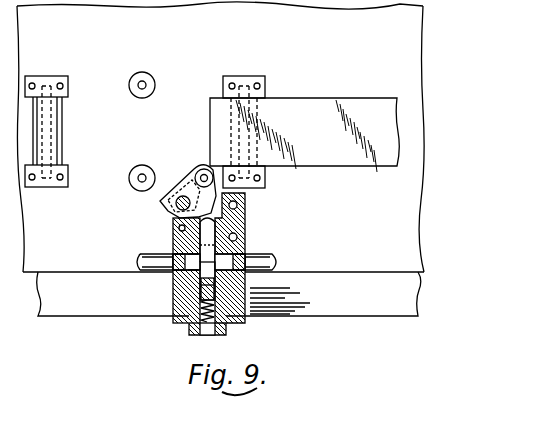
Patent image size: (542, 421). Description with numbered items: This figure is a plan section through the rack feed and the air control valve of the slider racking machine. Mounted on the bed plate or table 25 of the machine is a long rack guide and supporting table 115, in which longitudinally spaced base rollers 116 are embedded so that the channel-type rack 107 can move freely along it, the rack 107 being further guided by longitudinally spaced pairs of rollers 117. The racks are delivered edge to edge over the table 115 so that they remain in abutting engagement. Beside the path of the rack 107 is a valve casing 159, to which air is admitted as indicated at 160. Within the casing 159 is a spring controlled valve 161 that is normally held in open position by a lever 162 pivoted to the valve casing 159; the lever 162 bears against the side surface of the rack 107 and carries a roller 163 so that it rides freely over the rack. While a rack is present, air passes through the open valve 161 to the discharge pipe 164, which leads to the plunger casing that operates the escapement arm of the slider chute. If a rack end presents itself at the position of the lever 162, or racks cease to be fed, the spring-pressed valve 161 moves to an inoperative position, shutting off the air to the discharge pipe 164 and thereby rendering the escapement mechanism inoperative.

The table 25 is at (383, 305).
The channel-type rack 107 is at (332, 166).
The rack guide and supporting table 115 is at (335, 265).
The base rollers 116 is at (62, 137).
The pairs of rollers 117 is at (138, 164).
The valve casing 159 is at (245, 237).
The air admission 160 is at (277, 254).
The spring controlled valve 161 is at (195, 282).
The lever 162 is at (193, 172).
The roller 163 is at (208, 165).
The discharge pipe 164 is at (157, 253).